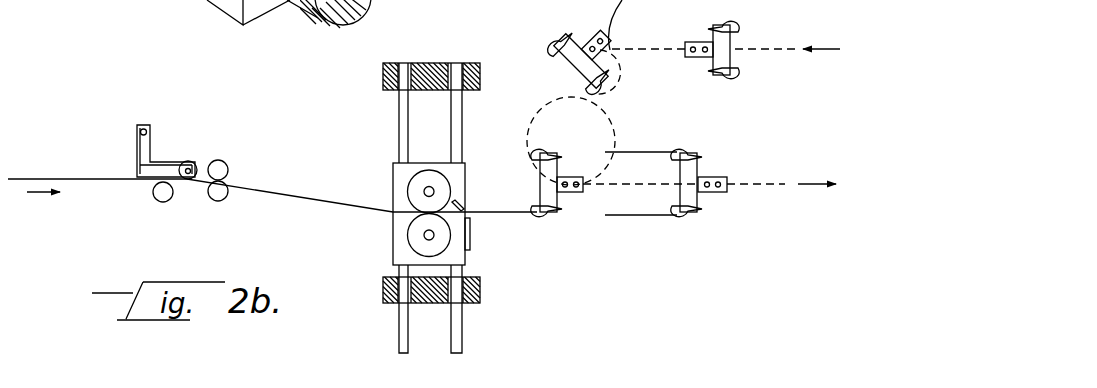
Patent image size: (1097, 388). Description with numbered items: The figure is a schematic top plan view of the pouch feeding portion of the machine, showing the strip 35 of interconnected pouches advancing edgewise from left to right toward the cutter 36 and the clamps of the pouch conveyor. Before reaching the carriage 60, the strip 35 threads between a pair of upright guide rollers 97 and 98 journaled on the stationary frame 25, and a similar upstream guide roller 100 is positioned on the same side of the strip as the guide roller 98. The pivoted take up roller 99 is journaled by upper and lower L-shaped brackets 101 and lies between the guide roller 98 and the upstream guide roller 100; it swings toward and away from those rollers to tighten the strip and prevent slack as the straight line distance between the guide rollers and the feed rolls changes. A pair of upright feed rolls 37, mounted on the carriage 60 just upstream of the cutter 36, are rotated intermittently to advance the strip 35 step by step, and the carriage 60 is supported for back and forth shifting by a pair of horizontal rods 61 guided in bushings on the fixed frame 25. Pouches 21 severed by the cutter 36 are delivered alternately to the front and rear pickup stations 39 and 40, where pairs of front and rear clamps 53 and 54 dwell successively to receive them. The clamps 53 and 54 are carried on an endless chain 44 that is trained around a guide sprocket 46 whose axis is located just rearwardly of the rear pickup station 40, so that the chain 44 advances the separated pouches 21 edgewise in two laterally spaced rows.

The pouches 21 is at (518, 217).
The frame 25 is at (428, 63).
The strip of interconnected pouches 35 is at (350, 205).
The cutter 36 is at (478, 208).
The feed rolls 37 is at (409, 230).
The front pickup station 39 is at (496, 229).
The rear pickup station 40 is at (510, 155).
The endless chain 44 is at (785, 184).
The guide sprocket 46 is at (602, 105).
The front clamp 53 is at (558, 220).
The rear clamp 54 is at (566, 146).
The carriage 60 is at (397, 250).
The horizontal rods 61 is at (452, 125).
The guide roller 97 is at (227, 162).
The guide roller 98 is at (222, 200).
The take up roller 99 is at (195, 162).
The upstream guide roller 100 is at (167, 200).
The L-shaped brackets 101 is at (138, 153).